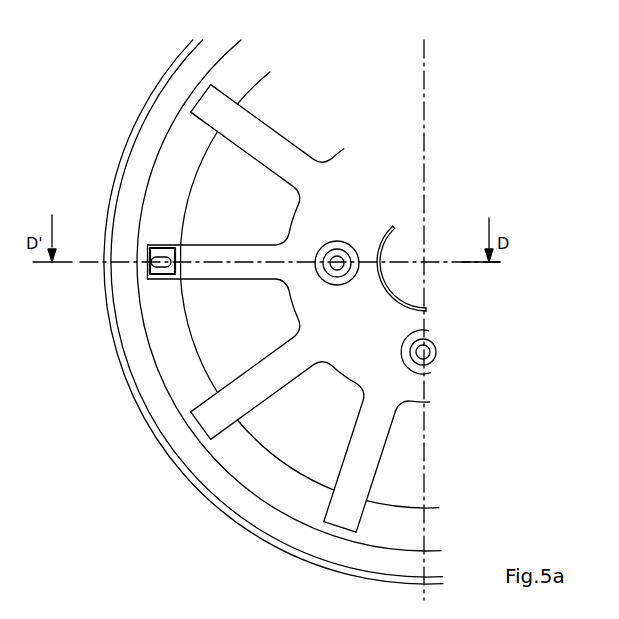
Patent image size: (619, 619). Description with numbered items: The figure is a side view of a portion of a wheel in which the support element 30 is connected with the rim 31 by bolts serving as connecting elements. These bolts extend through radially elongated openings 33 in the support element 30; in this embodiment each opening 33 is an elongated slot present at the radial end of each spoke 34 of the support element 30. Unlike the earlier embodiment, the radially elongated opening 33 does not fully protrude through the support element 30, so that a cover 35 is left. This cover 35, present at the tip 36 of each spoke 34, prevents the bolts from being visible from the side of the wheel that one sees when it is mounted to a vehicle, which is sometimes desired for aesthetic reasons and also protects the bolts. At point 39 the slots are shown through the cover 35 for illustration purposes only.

The support element 30 is at (283, 139).
The rim 31 is at (130, 318).
The radially elongated opening 33 is at (145, 268).
The spoke 34 is at (217, 102).
The cover 35 is at (205, 423).
The tip 36 is at (190, 418).
The point 39 is at (145, 250).